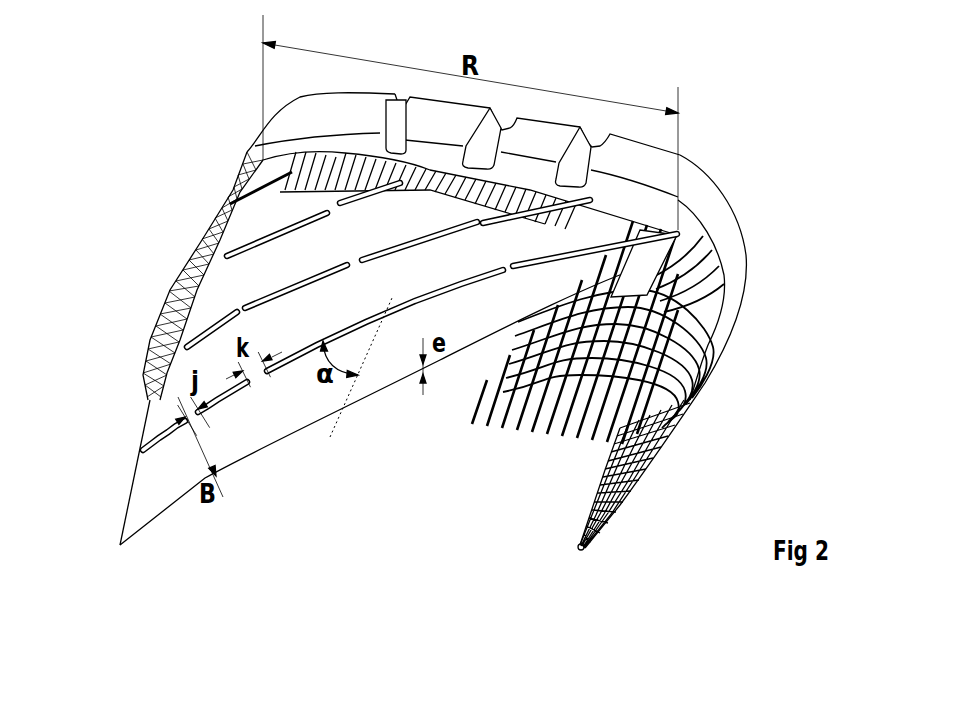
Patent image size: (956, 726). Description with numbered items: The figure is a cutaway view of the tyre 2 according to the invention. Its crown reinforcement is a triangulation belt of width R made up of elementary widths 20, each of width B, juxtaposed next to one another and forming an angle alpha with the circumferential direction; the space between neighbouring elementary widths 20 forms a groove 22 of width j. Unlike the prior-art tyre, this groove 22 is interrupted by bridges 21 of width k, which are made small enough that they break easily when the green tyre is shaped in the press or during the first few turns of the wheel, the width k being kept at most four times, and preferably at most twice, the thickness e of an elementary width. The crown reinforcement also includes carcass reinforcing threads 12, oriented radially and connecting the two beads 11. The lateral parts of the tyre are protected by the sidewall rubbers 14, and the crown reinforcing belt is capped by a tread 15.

The tyre 2 is at (164, 112).
The beads 11 is at (581, 549).
The carcass reinforcing threads 12 is at (655, 332).
The sidewall rubbers 14 is at (727, 256).
The tread 15 is at (688, 178).
The elementary widths 20 is at (240, 220).
The bridges 21 is at (240, 310).
The groove 22 is at (420, 241).